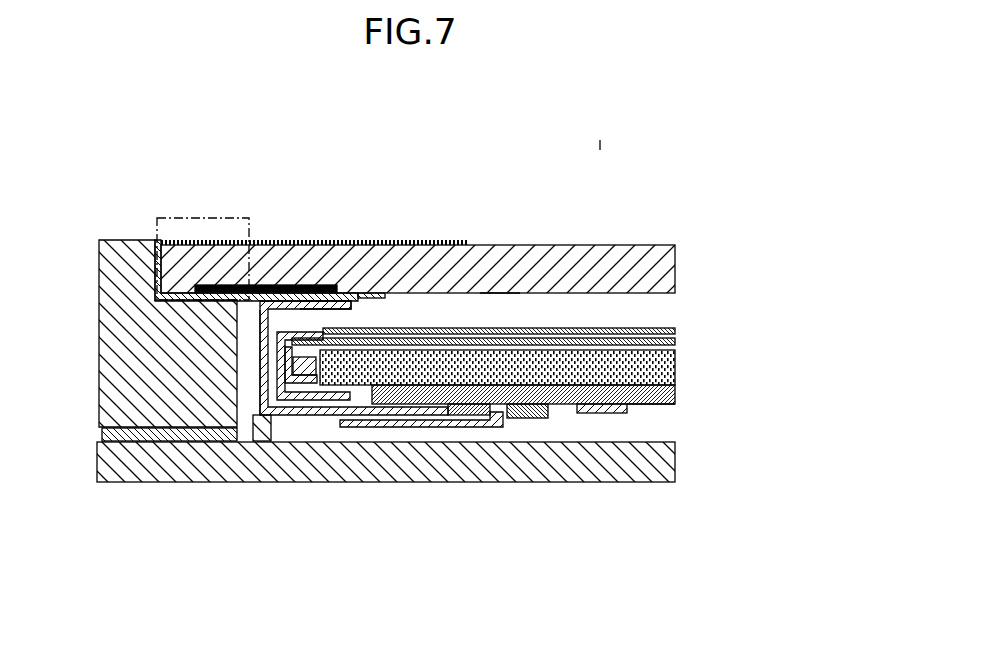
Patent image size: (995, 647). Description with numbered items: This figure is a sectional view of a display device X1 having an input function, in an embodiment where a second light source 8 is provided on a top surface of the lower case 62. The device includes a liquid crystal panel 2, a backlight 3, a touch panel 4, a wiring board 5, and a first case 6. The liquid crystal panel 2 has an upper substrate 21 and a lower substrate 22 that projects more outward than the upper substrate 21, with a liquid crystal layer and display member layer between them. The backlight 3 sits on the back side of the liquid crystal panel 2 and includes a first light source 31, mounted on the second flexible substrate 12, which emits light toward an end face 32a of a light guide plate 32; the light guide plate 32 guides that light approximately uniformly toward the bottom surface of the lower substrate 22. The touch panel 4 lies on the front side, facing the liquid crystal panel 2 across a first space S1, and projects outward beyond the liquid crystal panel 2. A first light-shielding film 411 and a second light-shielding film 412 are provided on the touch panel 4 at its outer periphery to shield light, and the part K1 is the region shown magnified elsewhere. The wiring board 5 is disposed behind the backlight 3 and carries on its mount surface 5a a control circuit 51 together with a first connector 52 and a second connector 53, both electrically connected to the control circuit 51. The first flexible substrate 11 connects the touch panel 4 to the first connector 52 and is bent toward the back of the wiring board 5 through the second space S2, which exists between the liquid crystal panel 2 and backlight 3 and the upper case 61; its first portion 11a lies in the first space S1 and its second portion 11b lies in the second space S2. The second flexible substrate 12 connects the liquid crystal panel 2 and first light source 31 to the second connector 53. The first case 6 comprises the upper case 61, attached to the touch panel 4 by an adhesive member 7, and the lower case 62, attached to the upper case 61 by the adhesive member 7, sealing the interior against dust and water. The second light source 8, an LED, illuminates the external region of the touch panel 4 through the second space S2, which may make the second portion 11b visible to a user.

The display device having an input function X1 is at (600, 150).
The liquid crystal panel 2 is at (541, 348).
The upper substrate 21 is at (675, 331).
The lower substrate 22 is at (524, 365).
The backlight 3 is at (476, 460).
The first light source 31 is at (289, 400).
The light guide plate 32 is at (363, 392).
The end face of the light guide plate 32a is at (303, 372).
The touch panel 4 is at (438, 248).
The first light-shielding film 411 is at (390, 244).
The second light-shielding film 412 is at (318, 322).
The wiring board 5 is at (675, 394).
The mount surface 5a is at (647, 405).
The control circuit 51 is at (600, 414).
The first connector 52 is at (470, 416).
The second connector 53 is at (535, 419).
The first case 6 is at (369, 414).
The upper case 61 is at (103, 330).
The lower case 62 is at (140, 441).
The adhesive member 7 is at (160, 296).
The second light source 8 is at (262, 441).
The first flexible substrate 11 is at (296, 415).
The first portion of the first flexible substrate 11a is at (318, 322).
The second portion of the first flexible substrate 11b is at (262, 322).
The second flexible substrate 12 is at (420, 428).
The part K1 is at (200, 216).
The first space S1 is at (501, 310).
The second space S2 is at (262, 322).